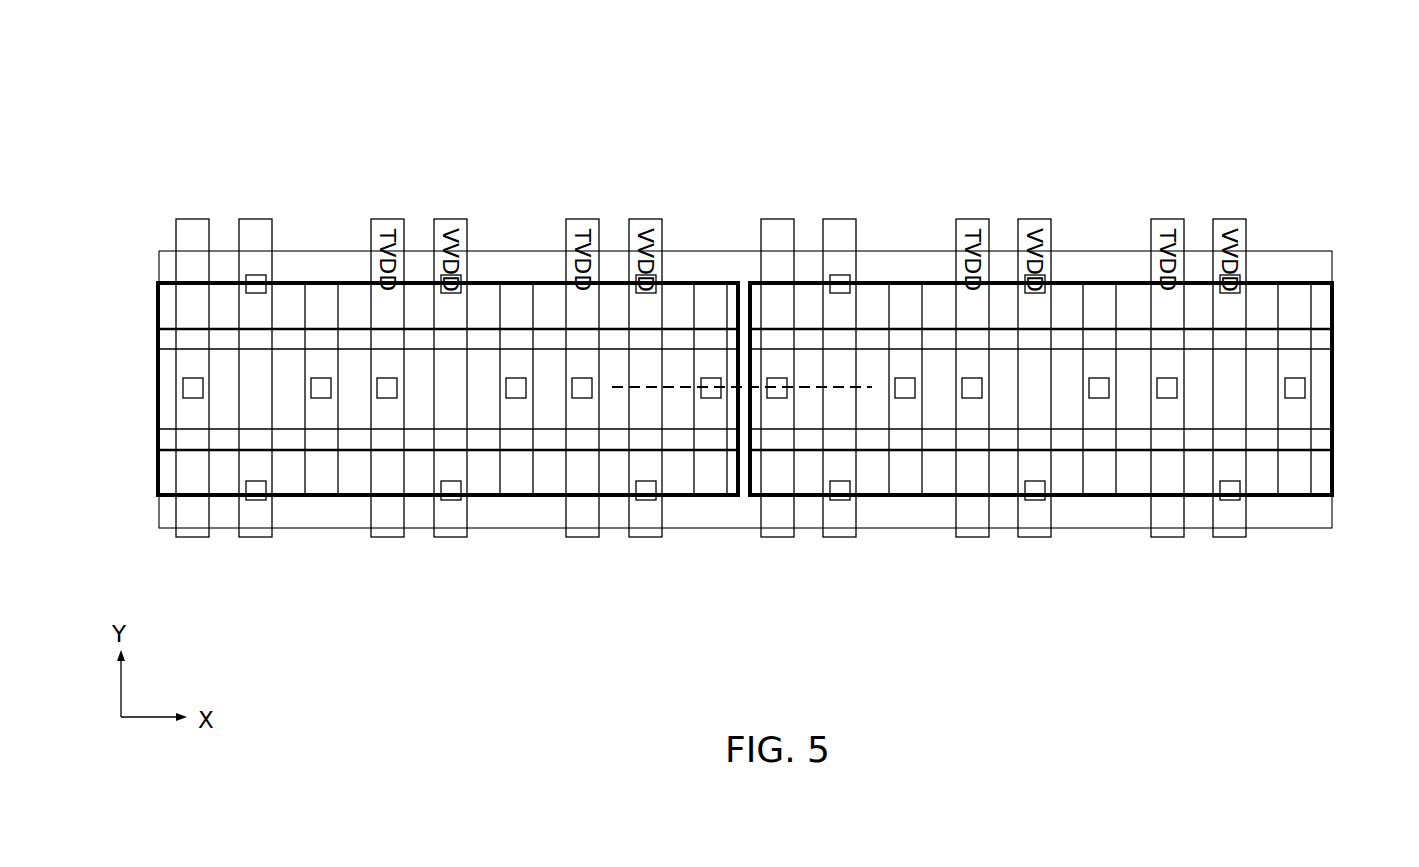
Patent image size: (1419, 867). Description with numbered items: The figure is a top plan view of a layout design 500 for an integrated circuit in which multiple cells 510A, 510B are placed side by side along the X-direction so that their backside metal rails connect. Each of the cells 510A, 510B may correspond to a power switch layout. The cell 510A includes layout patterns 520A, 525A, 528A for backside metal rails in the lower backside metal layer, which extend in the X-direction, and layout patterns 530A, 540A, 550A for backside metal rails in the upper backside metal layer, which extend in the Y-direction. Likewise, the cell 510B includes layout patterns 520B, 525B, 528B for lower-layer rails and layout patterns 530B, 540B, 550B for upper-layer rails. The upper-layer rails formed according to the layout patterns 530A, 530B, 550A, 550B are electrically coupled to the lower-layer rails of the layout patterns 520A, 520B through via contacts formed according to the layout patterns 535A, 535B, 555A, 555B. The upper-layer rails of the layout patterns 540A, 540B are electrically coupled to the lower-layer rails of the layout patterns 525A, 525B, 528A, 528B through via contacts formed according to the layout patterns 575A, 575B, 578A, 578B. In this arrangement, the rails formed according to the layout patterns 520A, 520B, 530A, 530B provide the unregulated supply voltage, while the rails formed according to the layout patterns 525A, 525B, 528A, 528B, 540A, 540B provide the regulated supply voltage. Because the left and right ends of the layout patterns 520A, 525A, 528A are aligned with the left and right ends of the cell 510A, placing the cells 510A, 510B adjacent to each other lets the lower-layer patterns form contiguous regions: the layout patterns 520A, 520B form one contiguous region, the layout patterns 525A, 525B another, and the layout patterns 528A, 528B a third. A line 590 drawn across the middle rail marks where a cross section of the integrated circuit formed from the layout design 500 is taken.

The layout design 500 is at (152, 80).
The cell 510A is at (157, 290).
The cell 510B is at (1333, 288).
The layout pattern 520A is at (167, 390).
The layout pattern 520B is at (1323, 392).
The layout pattern 525A is at (168, 472).
The layout pattern 525B is at (1323, 516).
The layout pattern 528A is at (167, 309).
The layout pattern 528B is at (1323, 308).
The layout pattern 530A is at (192, 219).
The layout pattern 530B is at (775, 219).
The layout pattern for via contact 535A is at (193, 398).
The layout pattern for via contact 535B is at (778, 398).
The layout pattern 540A is at (255, 219).
The layout pattern 540B is at (838, 219).
The layout pattern 550A is at (708, 290).
The layout pattern 550B is at (1293, 292).
The layout pattern for via contact 555A is at (713, 398).
The layout pattern for via contact 555B is at (1295, 398).
The layout pattern for via contact 575A is at (257, 500).
The layout pattern for via contact 575B is at (838, 500).
The layout pattern for via contact 578A is at (258, 292).
The layout pattern for via contact 578B is at (840, 293).
The line 590 is at (612, 387).